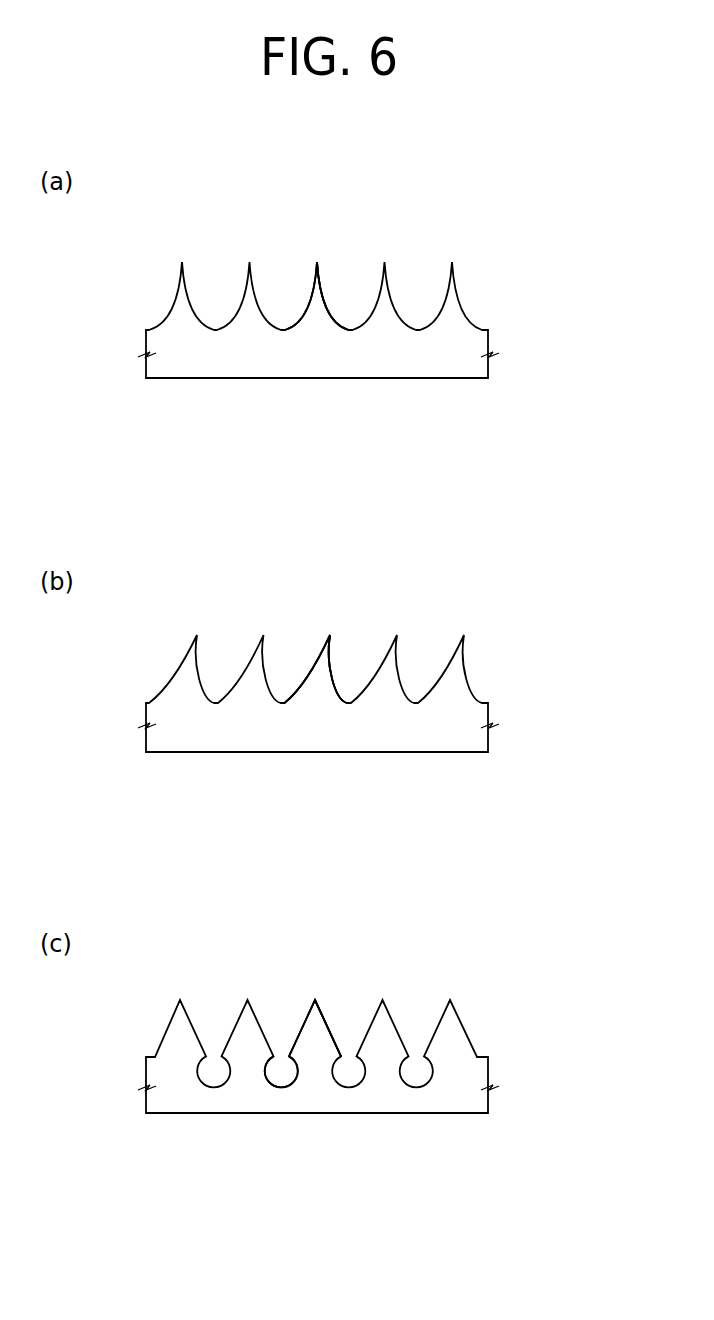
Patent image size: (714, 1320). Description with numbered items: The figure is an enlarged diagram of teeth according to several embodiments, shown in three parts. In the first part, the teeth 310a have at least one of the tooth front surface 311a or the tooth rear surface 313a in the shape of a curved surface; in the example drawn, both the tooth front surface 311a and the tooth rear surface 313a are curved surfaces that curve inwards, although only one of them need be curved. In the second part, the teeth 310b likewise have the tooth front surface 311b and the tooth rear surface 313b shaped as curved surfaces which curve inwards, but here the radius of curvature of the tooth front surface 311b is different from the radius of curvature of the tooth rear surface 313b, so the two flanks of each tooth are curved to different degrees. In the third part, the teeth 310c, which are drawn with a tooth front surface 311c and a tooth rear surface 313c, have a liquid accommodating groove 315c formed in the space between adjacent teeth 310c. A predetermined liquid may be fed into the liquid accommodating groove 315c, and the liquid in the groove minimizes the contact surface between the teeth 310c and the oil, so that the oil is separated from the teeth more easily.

The teeth 310a is at (500, 295).
The tooth front surface 311a is at (307, 300).
The tooth rear surface 313a is at (327, 298).
The teeth 310b is at (512, 677).
The tooth front surface 311b is at (312, 670).
The tooth rear surface 313b is at (332, 668).
The teeth 310c is at (509, 1042).
The tooth front surface 311c is at (302, 1028).
The tooth rear surface 313c is at (330, 1028).
The liquid accommodating groove 315c is at (286, 1069).